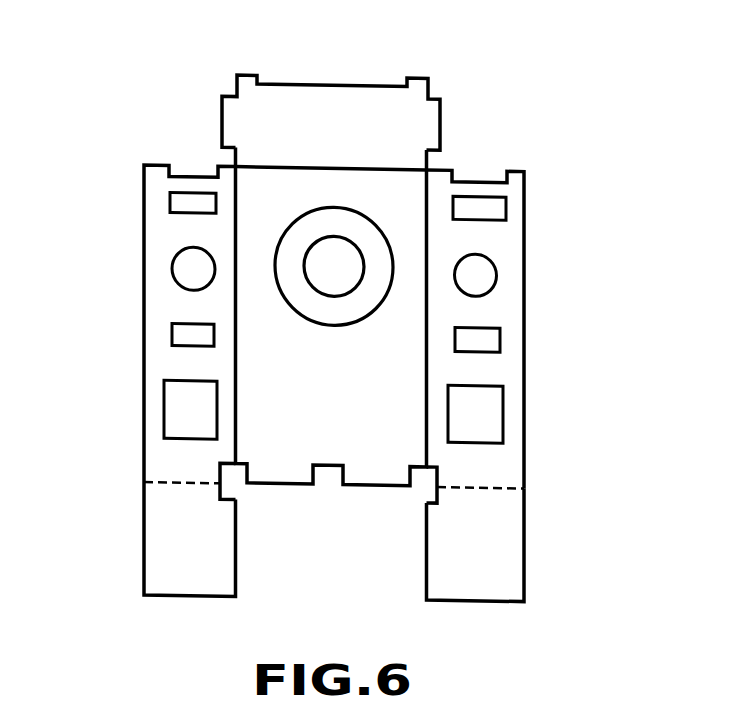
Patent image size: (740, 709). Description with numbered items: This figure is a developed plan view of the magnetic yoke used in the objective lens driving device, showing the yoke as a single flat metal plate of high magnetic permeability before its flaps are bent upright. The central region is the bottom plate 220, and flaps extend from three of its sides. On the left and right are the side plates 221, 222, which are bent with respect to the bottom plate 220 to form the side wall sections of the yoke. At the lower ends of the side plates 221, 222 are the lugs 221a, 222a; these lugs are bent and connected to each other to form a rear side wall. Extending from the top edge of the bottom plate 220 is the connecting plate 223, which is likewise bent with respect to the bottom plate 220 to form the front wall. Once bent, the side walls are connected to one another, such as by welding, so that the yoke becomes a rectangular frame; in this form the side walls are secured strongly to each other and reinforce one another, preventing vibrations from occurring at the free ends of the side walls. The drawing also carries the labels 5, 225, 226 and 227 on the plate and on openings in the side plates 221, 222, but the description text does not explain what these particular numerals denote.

The holder frame 5 is at (157, 247).
The bottom plate 220 is at (345, 443).
The side plate 221 is at (165, 460).
The lug 221a is at (153, 570).
The side plate 222 is at (510, 370).
The lug 222a is at (512, 580).
The connecting plate 223 is at (365, 98).
The rectangular slot 225 is at (172, 203).
The rectangular slot 226 is at (176, 338).
The circular hole 227 is at (173, 272).